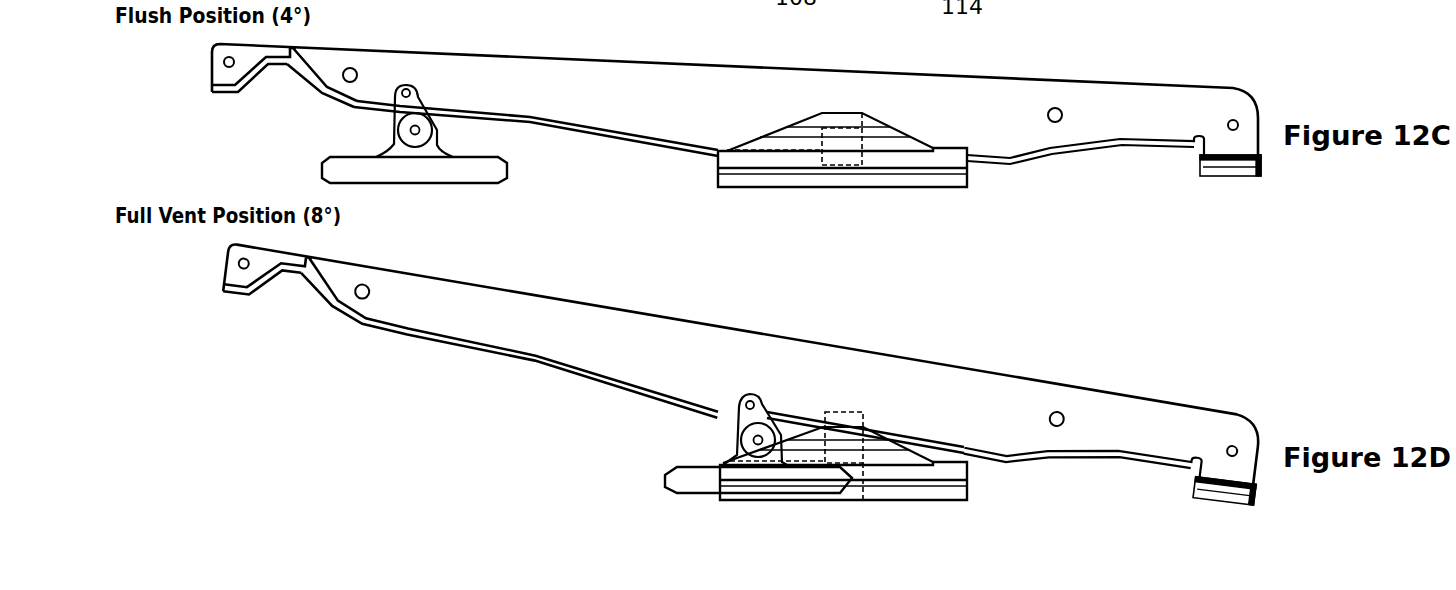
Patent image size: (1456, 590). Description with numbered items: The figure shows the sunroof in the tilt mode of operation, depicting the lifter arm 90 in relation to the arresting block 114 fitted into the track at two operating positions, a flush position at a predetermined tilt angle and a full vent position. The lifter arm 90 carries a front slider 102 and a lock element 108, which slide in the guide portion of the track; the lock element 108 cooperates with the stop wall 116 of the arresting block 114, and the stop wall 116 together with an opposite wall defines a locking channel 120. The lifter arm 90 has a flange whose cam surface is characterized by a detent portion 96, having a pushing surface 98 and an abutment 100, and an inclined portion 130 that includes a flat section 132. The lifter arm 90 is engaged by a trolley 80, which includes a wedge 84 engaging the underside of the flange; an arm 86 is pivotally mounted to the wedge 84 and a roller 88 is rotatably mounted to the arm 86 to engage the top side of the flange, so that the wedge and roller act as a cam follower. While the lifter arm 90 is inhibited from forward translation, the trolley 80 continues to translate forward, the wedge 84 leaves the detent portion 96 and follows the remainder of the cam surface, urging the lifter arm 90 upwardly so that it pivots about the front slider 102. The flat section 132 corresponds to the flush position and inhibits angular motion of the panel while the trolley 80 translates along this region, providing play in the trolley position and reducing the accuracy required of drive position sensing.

In FIG. 12C, the trolley 80 is at (377, 178).
In FIG. 12D, the trolley 80 is at (692, 486).
In FIG. 12C, the wedge 84 is at (437, 126).
In FIG. 12C, the arm 86 is at (418, 94).
In FIG. 12C, the roller 88 is at (407, 88).
In FIG. 12C, the lifter arm 90 is at (735, 104).
In FIG. 12D, the lifter arm 90 is at (740, 368).
In FIG. 12C, the detent portion 96 is at (270, 113).
In FIG. 12D, the detent portion 96 is at (289, 296).
In FIG. 12C, the pushing surface 98 is at (302, 86).
In FIG. 12C, the abutment 100 is at (294, 50).
In FIG. 12C, the front slider 102 is at (1235, 168).
In FIG. 12D, the front slider 102 is at (1230, 494).
In FIG. 12C, the lock element 108 is at (841, 156).
In FIG. 12D, the lock element 108 is at (843, 412).
In FIG. 12C, the arresting block 114 is at (957, 158).
In FIG. 12D, the arresting block 114 is at (958, 473).
In FIG. 12C, the stop wall 116 is at (855, 178).
In FIG. 12C, the locking channel 120 is at (840, 121).
In FIG. 12C, the inclined portion 130 is at (625, 148).
In FIG. 12D, the inclined portion 130 is at (560, 376).
In FIG. 12D, the flat section 132 is at (736, 395).